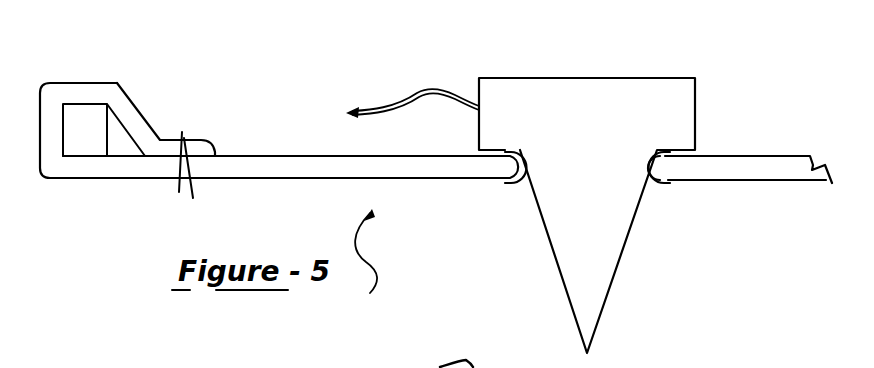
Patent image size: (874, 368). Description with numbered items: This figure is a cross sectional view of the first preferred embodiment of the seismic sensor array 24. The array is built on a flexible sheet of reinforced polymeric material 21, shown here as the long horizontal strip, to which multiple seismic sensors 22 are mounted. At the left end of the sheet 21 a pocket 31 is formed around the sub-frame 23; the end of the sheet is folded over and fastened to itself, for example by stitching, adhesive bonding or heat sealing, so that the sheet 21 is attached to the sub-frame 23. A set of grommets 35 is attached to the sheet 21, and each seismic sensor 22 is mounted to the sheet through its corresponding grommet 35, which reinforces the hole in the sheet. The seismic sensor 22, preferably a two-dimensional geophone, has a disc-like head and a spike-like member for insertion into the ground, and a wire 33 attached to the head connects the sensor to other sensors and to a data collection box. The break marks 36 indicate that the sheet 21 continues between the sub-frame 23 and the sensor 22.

The flexible sheet of reinforced polymeric material 21 is at (277, 155).
The seismic sensor 22 is at (683, 110).
The sub-frame 23 is at (77, 145).
The seismic sensor array 24 is at (359, 259).
The pocket 31 is at (118, 142).
The wire 33 is at (421, 90).
The grommet 35 is at (511, 187).
The break line 36 is at (180, 189).